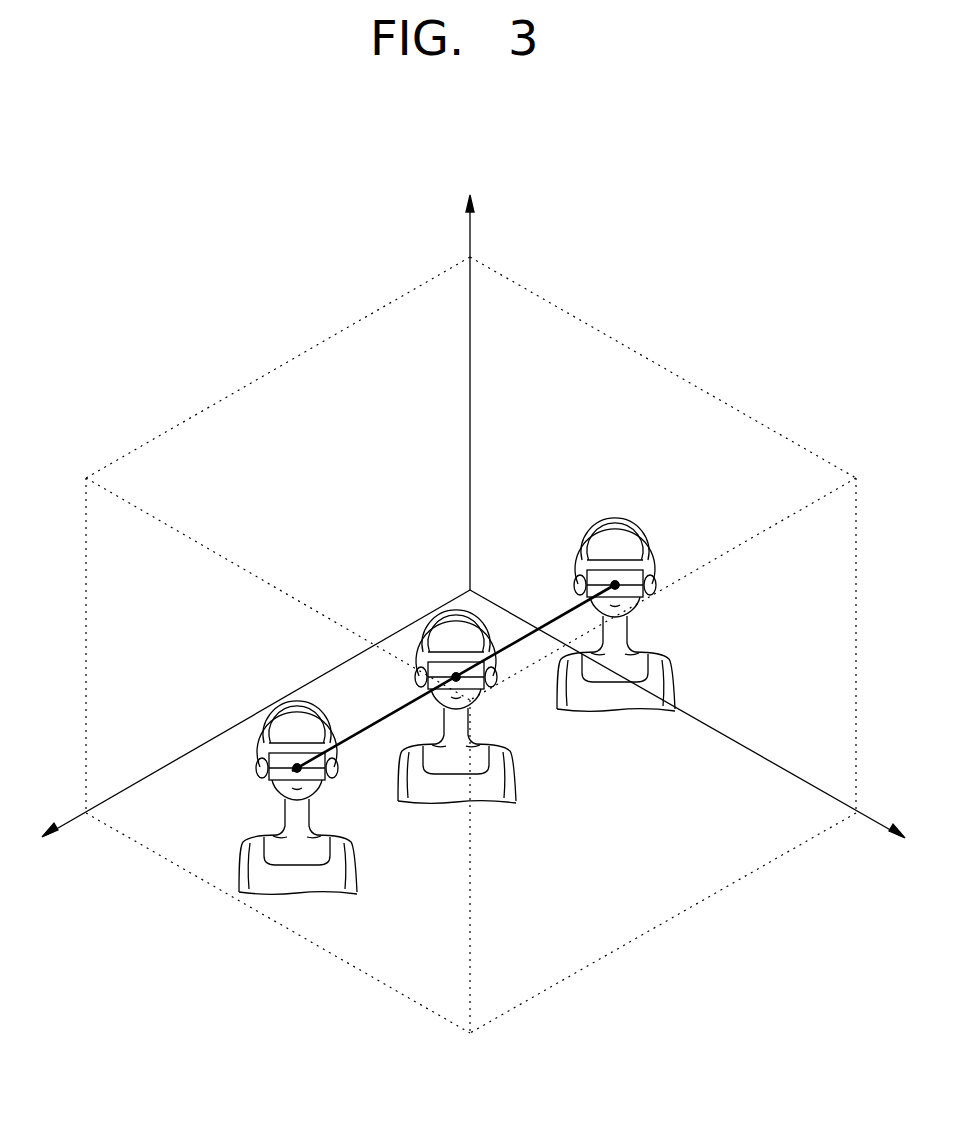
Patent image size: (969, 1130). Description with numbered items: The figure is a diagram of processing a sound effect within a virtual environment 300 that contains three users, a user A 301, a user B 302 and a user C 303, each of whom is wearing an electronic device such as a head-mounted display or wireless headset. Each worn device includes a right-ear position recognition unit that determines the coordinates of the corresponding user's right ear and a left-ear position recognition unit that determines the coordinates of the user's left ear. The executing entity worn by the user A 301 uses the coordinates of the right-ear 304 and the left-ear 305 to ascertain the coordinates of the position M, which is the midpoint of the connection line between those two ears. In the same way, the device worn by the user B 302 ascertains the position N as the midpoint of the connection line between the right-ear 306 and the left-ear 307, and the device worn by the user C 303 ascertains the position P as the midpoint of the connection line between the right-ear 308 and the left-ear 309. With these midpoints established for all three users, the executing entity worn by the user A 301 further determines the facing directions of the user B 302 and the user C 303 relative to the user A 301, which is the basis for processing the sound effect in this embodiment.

The virtual environment 300 is at (803, 360).
The user A 301 is at (520, 767).
The user B 302 is at (362, 858).
The user C 303 is at (680, 677).
The right-ear 304 is at (415, 677).
The left-ear 305 is at (497, 680).
The right-ear 306 is at (258, 767).
The left-ear 307 is at (340, 777).
The right-ear 308 is at (578, 580).
The left-ear 309 is at (657, 580).
The position N is at (273, 713).
The position M is at (437, 630).
The position P is at (605, 547).